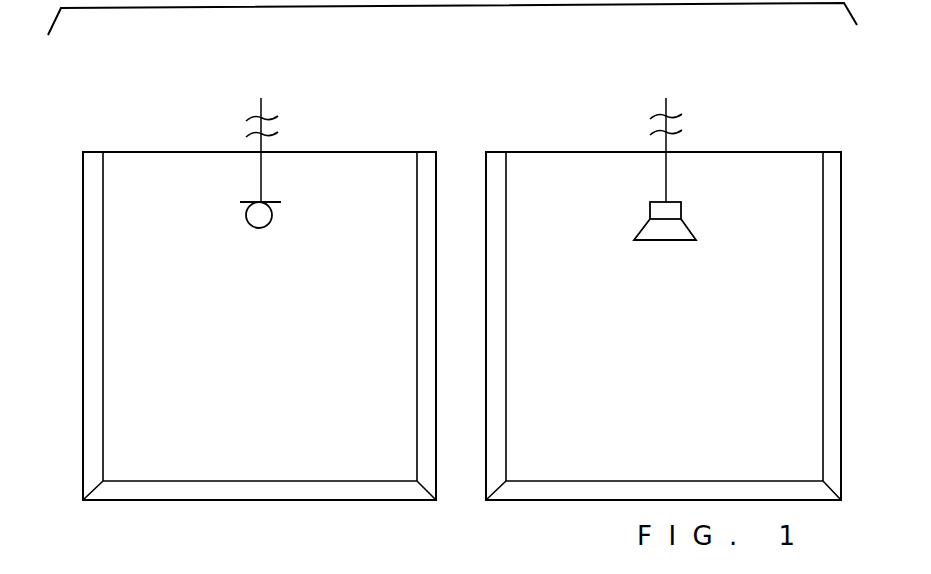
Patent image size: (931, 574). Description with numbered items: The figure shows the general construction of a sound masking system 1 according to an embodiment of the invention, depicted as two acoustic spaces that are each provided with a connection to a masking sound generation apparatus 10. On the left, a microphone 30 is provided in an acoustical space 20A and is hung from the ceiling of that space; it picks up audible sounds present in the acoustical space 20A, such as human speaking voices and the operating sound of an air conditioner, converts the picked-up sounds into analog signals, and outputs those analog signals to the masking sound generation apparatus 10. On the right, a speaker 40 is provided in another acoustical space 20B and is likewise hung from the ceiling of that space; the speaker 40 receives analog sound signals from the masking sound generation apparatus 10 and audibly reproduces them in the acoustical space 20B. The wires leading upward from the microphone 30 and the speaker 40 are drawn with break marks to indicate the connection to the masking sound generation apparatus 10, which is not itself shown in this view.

The sound masking system 1 is at (112, 61).
The masking sound generation apparatus 10 is at (471, 125).
The acoustical space 20A is at (400, 151).
The acoustical space 20B is at (806, 151).
The microphone 30 is at (258, 228).
The speaker 40 is at (665, 242).